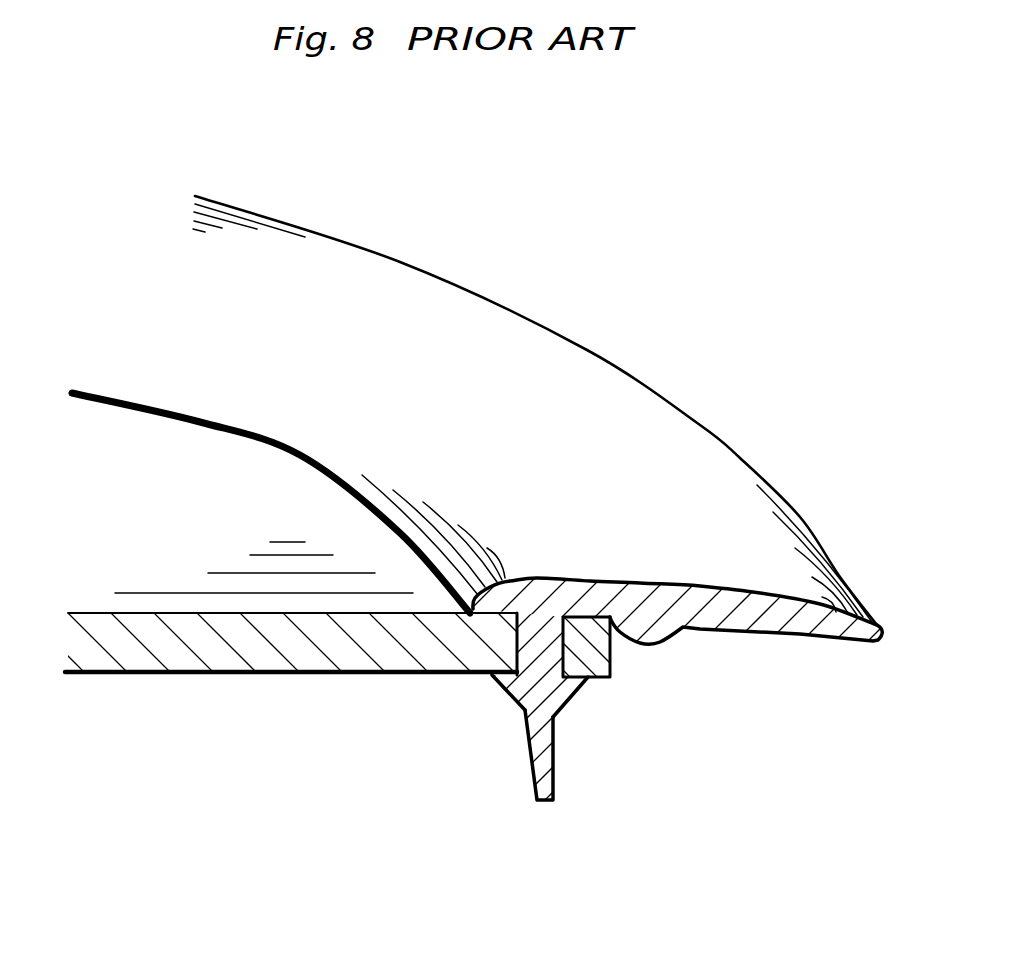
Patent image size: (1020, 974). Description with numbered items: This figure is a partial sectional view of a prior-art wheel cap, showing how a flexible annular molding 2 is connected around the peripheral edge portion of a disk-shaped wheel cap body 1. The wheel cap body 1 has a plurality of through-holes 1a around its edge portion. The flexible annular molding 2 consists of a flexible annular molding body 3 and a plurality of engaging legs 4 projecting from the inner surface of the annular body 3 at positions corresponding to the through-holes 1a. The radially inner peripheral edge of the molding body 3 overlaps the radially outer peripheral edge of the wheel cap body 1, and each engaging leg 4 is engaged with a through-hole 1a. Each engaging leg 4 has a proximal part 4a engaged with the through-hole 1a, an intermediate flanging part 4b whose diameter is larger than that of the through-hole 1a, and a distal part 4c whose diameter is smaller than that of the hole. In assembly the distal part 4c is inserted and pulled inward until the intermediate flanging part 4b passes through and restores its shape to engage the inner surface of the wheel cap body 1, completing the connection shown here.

The wheel cap body 1 is at (188, 672).
The through-hole 1a is at (515, 617).
The flexible annular molding 2 is at (830, 490).
The flexible annular molding body 3 is at (467, 488).
The engaging leg 4 is at (550, 703).
The proximal part 4a is at (553, 655).
The intermediate flanging part 4b is at (557, 695).
The distal part 4c is at (558, 775).